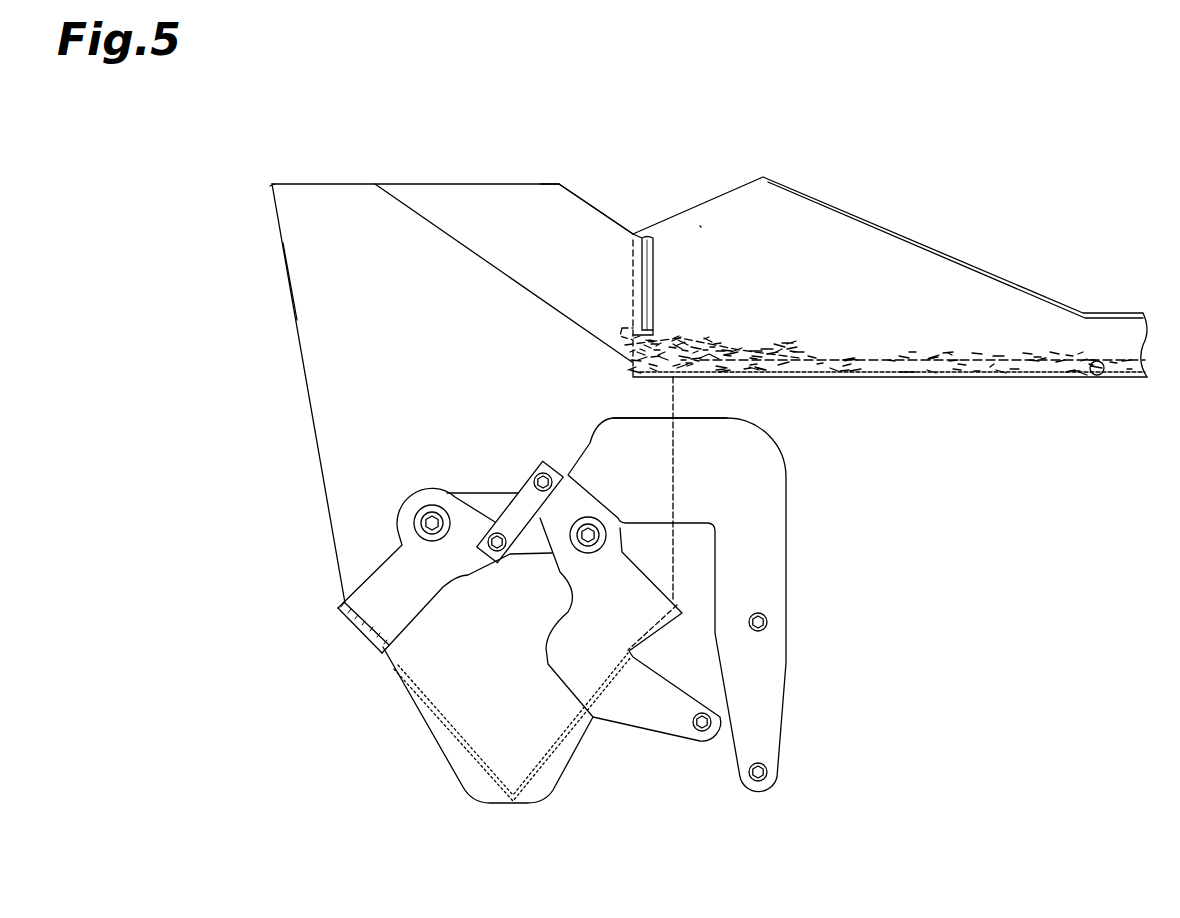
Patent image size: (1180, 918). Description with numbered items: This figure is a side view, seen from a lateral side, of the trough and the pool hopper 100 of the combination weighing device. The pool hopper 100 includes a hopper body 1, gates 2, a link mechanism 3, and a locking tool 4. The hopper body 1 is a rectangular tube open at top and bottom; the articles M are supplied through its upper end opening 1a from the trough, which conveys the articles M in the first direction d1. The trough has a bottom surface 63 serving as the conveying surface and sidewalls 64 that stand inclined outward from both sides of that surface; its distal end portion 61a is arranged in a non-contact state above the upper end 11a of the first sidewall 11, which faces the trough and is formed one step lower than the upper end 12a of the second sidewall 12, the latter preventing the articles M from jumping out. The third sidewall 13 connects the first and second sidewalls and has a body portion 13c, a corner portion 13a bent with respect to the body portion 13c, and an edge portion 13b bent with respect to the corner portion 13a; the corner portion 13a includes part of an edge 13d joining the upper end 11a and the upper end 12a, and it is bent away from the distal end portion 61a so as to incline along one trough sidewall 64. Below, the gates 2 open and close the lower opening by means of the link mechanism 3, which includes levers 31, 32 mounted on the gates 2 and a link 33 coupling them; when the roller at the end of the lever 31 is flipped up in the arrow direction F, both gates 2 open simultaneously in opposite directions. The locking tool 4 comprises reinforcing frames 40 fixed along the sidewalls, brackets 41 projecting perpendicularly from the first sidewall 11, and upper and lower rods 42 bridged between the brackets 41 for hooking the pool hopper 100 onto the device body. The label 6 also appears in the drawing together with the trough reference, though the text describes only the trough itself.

The hopper body 1 is at (665, 348).
The upper end opening 1a is at (447, 182).
The gates 2 is at (430, 733).
The link mechanism 3 is at (530, 600).
The locking tool 4 is at (726, 583).
The cover 6 is at (883, 205).
The first sidewall 11 is at (673, 560).
The upper end of the first sidewall 11a is at (650, 410).
The second sidewall 12 is at (297, 332).
The upper end of the second sidewall 12a is at (272, 184).
The third sidewall 13 is at (347, 255).
The corner portion 13a is at (562, 228).
The edge portion 13b is at (655, 292).
The body portion 13c is at (298, 243).
The edge 13d is at (520, 182).
The lever 31 is at (648, 690).
The lever 32 is at (388, 600).
The link 33 is at (527, 510).
The reinforcing frame 40 is at (623, 443).
The bracket 41 is at (740, 465).
The rod 42 is at (768, 622).
The distal end portion of the trough 61a is at (632, 270).
The bottom surface 63 is at (1100, 378).
The sidewall of the trough 64 is at (907, 345).
The pool hopper 100 is at (701, 226).
The articles M is at (845, 347).
The arrow direction F is at (720, 713).
The first direction d1 is at (770, 843).